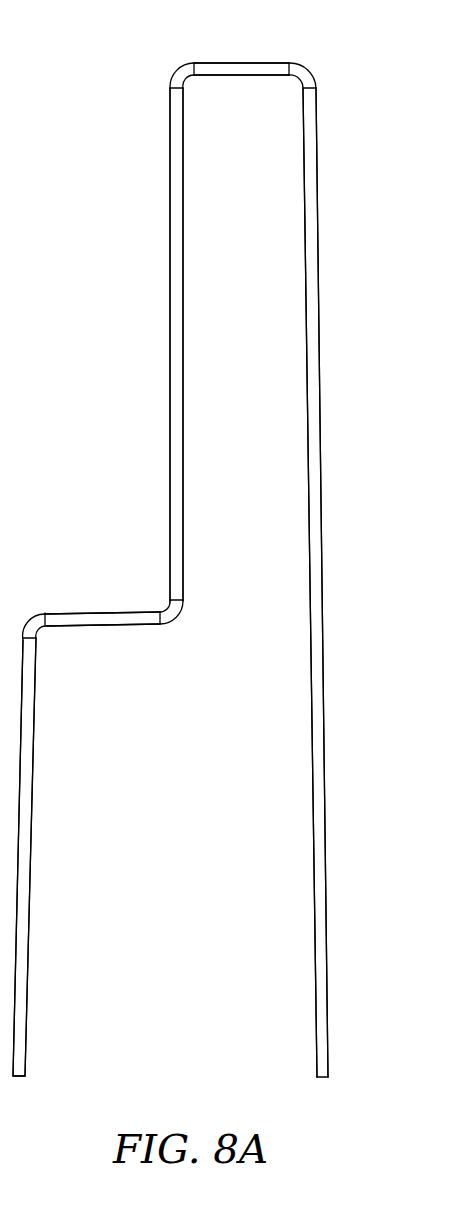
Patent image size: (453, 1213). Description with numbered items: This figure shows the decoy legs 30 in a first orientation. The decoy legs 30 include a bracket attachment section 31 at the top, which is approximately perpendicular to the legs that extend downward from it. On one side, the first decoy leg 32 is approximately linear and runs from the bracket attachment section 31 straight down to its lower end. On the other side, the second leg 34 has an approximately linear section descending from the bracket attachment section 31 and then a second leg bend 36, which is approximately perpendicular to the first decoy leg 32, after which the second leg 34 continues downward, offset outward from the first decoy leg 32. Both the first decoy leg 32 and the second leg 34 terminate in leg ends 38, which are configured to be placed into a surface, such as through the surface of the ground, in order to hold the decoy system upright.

The decoy legs 30 is at (359, 82).
The bracket attachment section 31 is at (216, 63).
The first decoy leg 32 is at (320, 370).
The second leg 34 is at (170, 370).
The second leg bend 36 is at (96, 612).
The leg ends 38 is at (27, 1068).